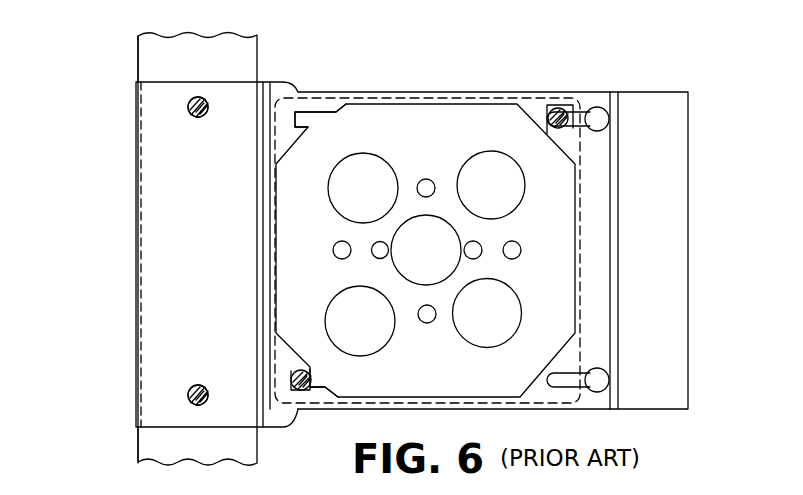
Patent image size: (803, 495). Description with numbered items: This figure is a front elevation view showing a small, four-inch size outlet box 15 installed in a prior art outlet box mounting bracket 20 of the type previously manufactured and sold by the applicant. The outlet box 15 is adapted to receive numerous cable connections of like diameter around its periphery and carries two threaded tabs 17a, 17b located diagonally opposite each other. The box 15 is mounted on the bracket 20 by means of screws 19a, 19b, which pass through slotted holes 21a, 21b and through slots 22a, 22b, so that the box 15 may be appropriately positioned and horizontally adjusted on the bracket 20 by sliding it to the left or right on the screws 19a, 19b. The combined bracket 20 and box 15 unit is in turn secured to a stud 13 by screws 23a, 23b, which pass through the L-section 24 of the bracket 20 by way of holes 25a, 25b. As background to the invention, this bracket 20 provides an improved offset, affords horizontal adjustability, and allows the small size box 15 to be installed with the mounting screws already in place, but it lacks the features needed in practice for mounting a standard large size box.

The stud 13 is at (247, 52).
The outlet box 15 is at (412, 92).
The threaded tab 17a is at (553, 148).
The threaded tab 17b is at (308, 370).
The screw 19a is at (561, 108).
The screw 19b is at (312, 378).
The outlet box mounting bracket 20 is at (632, 88).
The slotted hole 21a is at (607, 120).
The slotted hole 21b is at (607, 379).
The slot 22a is at (310, 126).
The slot 22b is at (318, 386).
The screw 23a is at (219, 73).
The screw 23b is at (198, 405).
The L-section 24 is at (165, 247).
The hole 25a is at (198, 118).
The hole 25b is at (198, 385).